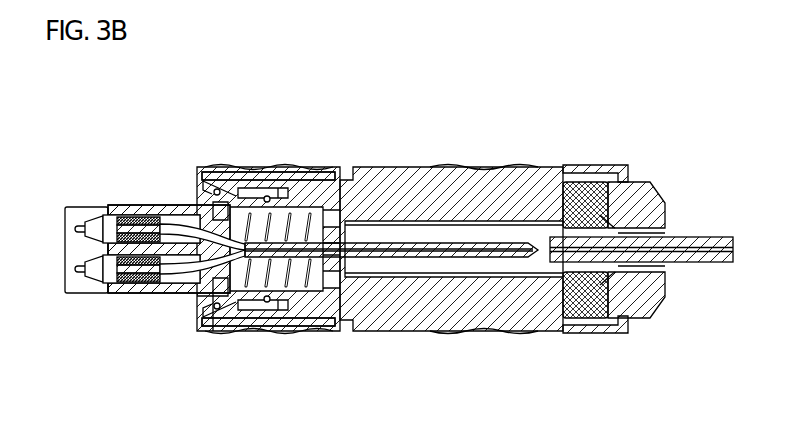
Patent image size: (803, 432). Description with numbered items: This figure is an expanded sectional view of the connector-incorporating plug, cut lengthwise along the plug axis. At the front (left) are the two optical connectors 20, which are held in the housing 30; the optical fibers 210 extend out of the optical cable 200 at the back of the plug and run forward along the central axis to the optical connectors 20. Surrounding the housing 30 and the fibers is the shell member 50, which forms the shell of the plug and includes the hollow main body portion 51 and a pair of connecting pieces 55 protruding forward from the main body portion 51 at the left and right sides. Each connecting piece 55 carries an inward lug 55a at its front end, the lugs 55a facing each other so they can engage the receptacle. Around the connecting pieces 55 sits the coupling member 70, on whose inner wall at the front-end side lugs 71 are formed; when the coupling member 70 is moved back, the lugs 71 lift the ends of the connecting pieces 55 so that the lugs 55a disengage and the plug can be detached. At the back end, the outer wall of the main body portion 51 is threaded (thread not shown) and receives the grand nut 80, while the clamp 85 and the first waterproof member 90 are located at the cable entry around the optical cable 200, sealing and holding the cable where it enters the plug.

The optical connector 20 is at (100, 258).
The housing 30 is at (185, 216).
The shell member 50 is at (515, 167).
The main body portion 51 is at (425, 332).
The connecting piece 55 is at (268, 172).
The lug 55a is at (215, 182).
The coupling member 70 is at (316, 167).
The lug 71 is at (199, 302).
The grand nut 80 is at (655, 183).
The clamp 85 is at (617, 318).
The first waterproof member 90 is at (578, 320).
The optical cable 200 is at (703, 237).
The optical fiber 210 is at (397, 244).